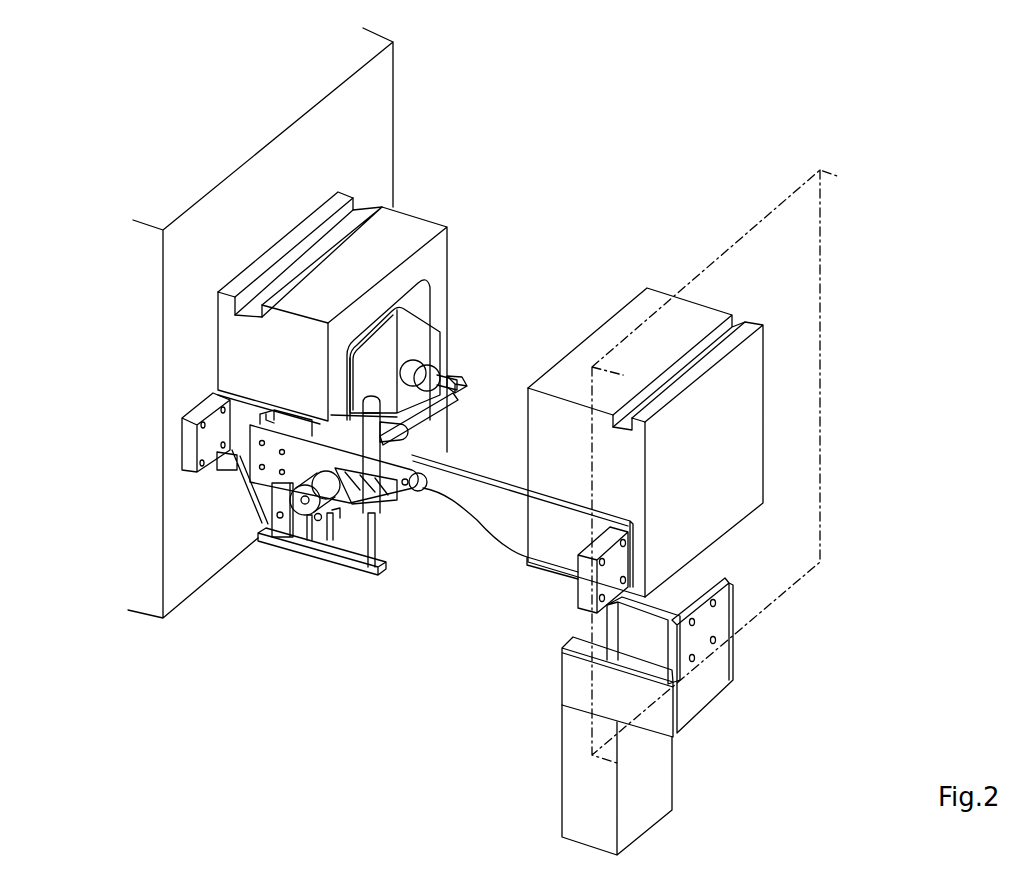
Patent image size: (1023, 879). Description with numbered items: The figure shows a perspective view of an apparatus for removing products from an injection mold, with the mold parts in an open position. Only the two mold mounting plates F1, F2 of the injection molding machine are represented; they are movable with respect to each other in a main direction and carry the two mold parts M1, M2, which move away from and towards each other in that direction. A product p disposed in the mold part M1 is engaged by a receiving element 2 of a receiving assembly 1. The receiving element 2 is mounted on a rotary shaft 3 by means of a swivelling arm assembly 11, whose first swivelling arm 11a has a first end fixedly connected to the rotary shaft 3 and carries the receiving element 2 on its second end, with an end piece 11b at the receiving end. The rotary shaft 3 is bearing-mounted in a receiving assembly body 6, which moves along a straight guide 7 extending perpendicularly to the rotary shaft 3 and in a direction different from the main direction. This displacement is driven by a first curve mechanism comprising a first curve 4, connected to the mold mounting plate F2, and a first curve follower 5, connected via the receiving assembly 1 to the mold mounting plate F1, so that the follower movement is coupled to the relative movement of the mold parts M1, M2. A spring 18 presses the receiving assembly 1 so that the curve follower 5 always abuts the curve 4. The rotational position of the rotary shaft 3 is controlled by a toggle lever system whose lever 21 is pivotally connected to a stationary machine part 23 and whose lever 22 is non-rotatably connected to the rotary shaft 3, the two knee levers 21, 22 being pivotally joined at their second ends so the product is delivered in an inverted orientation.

The receiving assembly 1 is at (396, 539).
The receiving element 2 is at (436, 363).
The rotary shaft 3 is at (305, 505).
The first curve 4 is at (537, 540).
The first curve follower 5 is at (423, 484).
The receiving assembly body 6 is at (306, 471).
The straight guide 7 is at (277, 503).
The swivelling arm assembly 11 is at (427, 413).
The first swivelling arm 11a is at (408, 427).
The end block 11b is at (467, 383).
The spring 18 is at (374, 487).
The lever 21 is at (320, 520).
The lever 22 is at (373, 537).
The stationary machine part 23 is at (335, 515).
The mold mounting plate F1 is at (209, 252).
The mold mounting plate F2 is at (784, 267).
The mold part M1 is at (270, 365).
The mold part M2 is at (572, 447).
The product p is at (408, 336).